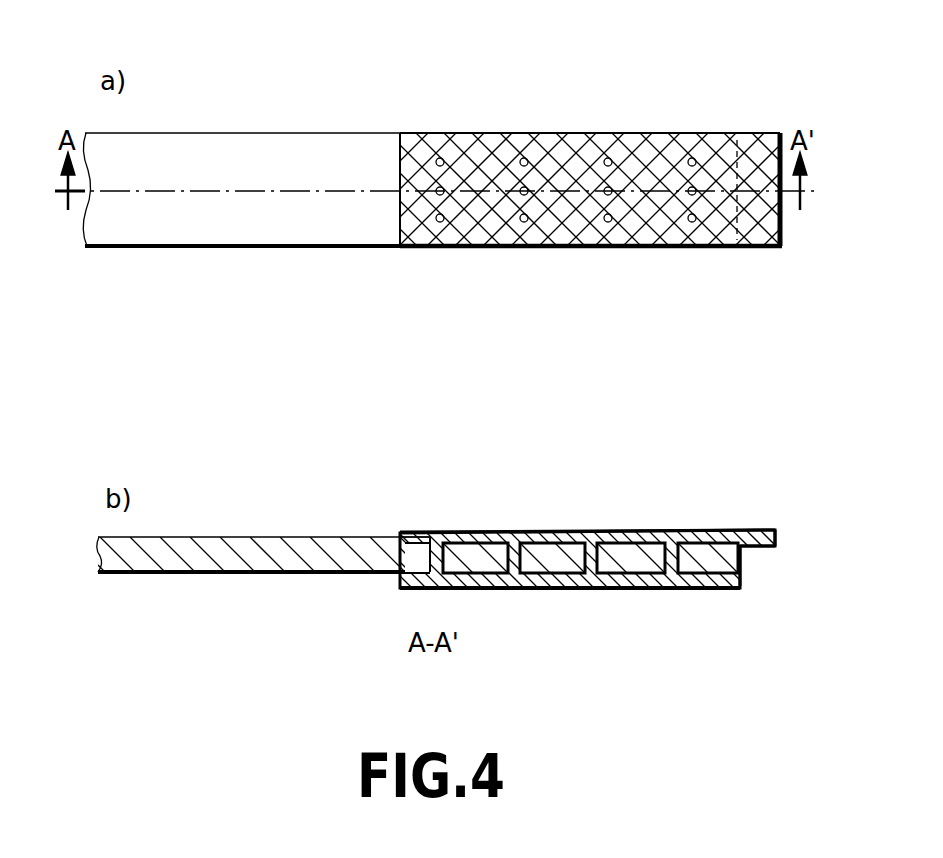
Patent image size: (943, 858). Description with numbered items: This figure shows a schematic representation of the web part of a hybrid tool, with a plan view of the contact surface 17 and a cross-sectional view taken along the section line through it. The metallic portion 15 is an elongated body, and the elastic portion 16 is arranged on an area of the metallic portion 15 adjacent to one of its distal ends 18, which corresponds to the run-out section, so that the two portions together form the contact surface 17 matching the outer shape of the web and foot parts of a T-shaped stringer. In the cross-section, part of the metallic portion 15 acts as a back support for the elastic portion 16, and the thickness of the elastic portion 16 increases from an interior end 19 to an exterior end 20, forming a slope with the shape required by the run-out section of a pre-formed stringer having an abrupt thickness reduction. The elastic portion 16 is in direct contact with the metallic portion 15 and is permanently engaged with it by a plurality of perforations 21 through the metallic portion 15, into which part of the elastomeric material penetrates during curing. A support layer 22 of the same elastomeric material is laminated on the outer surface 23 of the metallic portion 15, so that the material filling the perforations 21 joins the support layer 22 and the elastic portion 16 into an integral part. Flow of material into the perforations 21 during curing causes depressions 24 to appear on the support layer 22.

The metallic portion 15 is at (212, 165).
The elastic portion 16 is at (637, 160).
The contact surface 17 is at (448, 150).
The distal end 18 is at (737, 160).
The interior end 19 is at (398, 238).
The exterior end 20 is at (782, 248).
The perforations 21 is at (410, 578).
The support layer 22 is at (710, 588).
The outer surface 23 is at (765, 155).
The depressions 24 is at (524, 160).